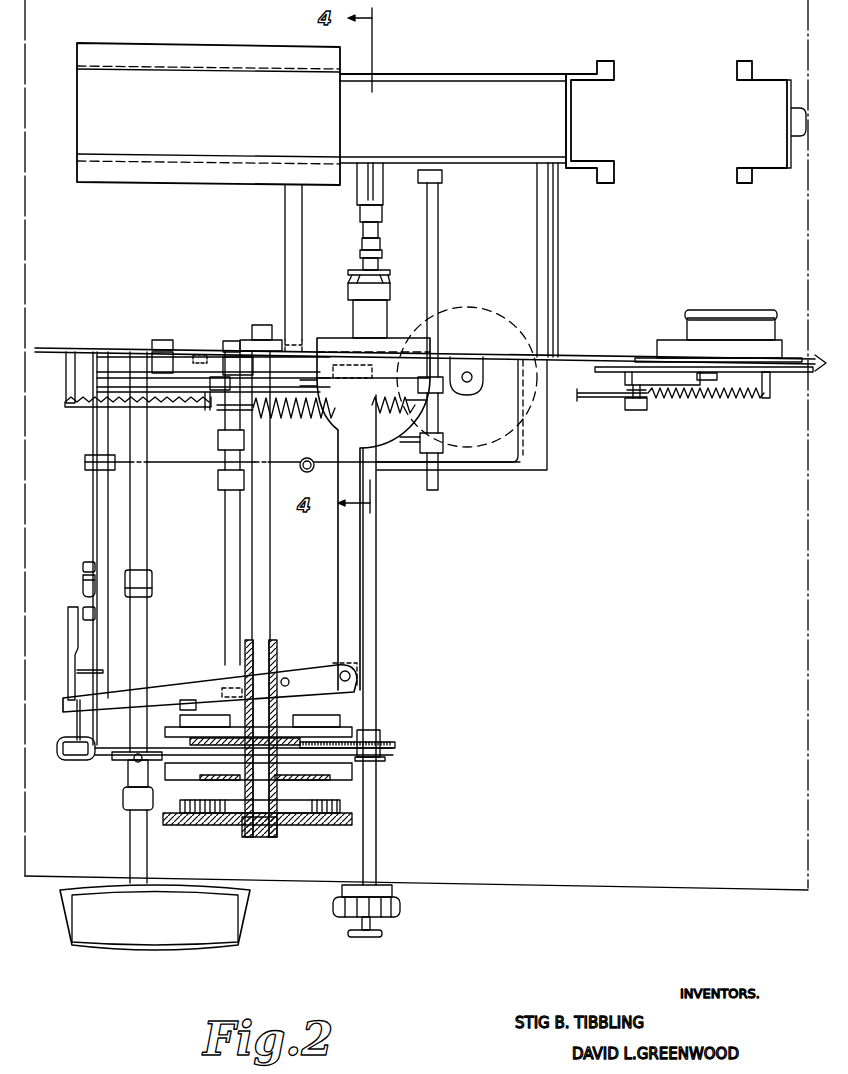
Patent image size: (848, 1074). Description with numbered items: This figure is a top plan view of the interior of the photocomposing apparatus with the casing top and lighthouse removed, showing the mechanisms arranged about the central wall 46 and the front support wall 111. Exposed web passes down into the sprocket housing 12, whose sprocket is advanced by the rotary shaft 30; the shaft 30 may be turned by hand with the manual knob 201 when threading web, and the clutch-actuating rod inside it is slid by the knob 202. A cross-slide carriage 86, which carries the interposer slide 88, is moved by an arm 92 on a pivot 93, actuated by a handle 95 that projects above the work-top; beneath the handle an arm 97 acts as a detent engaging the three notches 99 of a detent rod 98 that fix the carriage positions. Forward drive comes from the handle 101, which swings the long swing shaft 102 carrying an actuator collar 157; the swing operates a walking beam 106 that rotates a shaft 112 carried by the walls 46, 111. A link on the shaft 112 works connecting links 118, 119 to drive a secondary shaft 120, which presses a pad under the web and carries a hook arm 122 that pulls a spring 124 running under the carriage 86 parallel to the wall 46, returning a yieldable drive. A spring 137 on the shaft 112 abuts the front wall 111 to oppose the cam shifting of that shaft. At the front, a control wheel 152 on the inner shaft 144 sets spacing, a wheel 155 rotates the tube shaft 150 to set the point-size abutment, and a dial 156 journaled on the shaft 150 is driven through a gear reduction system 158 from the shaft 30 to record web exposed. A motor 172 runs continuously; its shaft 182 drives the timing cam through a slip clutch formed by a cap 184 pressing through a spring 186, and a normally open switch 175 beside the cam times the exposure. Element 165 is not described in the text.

The sprocket housing 12 is at (113, 183).
The central wall 46 is at (70, 347).
The interposer slide 88 is at (373, 375).
The cross-slide carriage 86 is at (337, 573).
The shaft 30 is at (376, 633).
The secondary shaft 120 is at (436, 485).
The hook arm 122 is at (425, 405).
The spring 124 is at (312, 420).
The connecting link 118 is at (305, 463).
The connecting link 119 is at (420, 438).
The walking beam 106 is at (196, 461).
The motor 172 is at (753, 303).
The spring 186 is at (618, 381).
The bar 165 is at (610, 399).
The cap 184 is at (630, 412).
The motor shaft 182 is at (639, 410).
The normally open switch 175 is at (702, 393).
The detent rod 98 is at (88, 560).
The notches 99 is at (82, 590).
The shaft 112 is at (225, 535).
The actuator collar 157 is at (152, 582).
The swing shaft 102 is at (147, 622).
The tube shaft 150 is at (268, 606).
The shaft 144 is at (258, 838).
The arm 92 is at (205, 680).
The pivot 93 is at (286, 678).
The spring 137 is at (186, 712).
The arm 97 is at (73, 735).
The handle 95 is at (78, 760).
The dial 156 is at (345, 721).
The gear reduction system 158 is at (396, 746).
The front support wall 111 is at (394, 752).
The wheel 155 is at (353, 775).
The control wheel 152 is at (178, 828).
The manual knob 201 is at (402, 908).
The knob 202 is at (384, 933).
The handle 101 is at (95, 937).